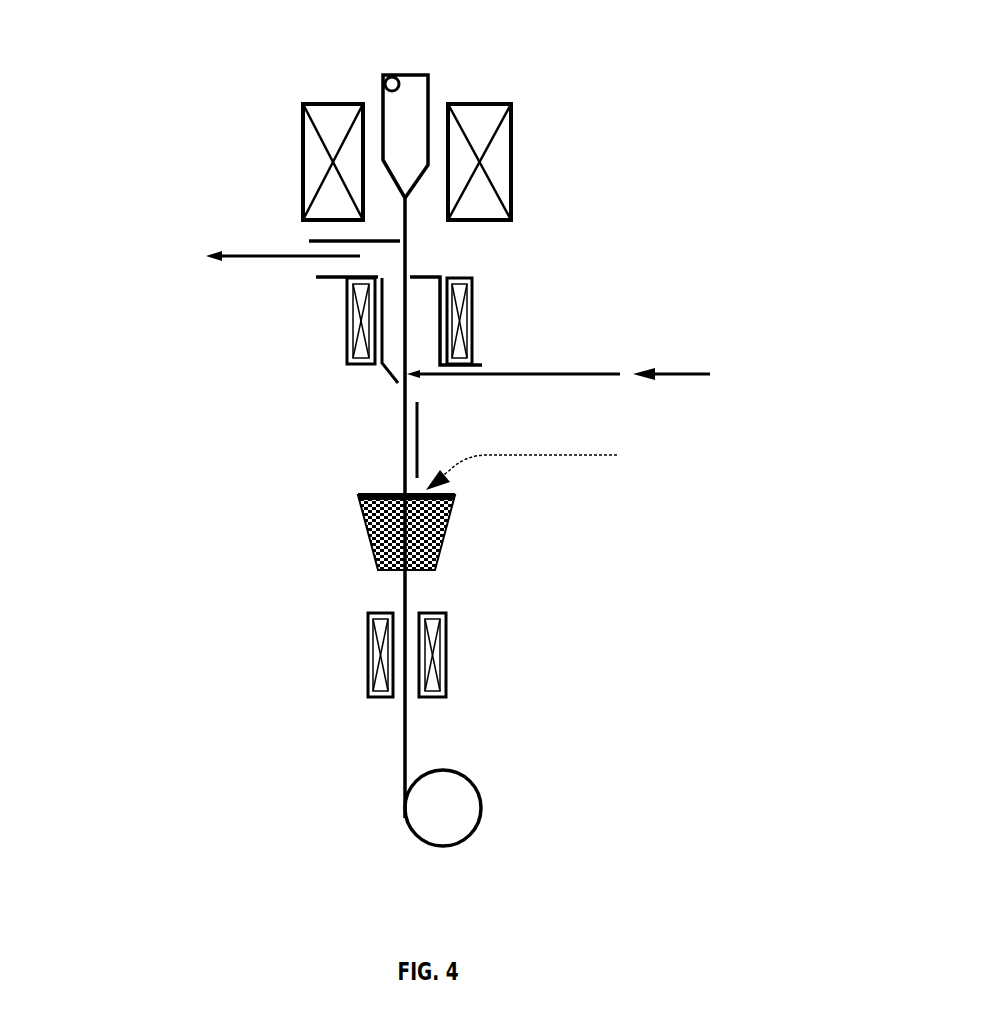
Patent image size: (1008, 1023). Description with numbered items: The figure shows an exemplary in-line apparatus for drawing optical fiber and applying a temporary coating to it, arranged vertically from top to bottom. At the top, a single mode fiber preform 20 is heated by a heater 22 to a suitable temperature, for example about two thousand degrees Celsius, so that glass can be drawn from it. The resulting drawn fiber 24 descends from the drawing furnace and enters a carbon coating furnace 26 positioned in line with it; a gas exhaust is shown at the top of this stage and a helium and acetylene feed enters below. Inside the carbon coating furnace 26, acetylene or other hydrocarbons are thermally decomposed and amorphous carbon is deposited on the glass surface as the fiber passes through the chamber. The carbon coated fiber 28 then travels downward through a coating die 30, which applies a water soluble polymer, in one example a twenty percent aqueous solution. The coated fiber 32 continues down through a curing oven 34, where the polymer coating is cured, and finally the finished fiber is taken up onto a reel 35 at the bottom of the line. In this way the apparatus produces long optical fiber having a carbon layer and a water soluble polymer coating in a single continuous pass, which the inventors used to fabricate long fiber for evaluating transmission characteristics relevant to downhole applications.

The single mode fiber preform 20 is at (425, 75).
The heater 22 is at (497, 156).
The drawn fiber 24 is at (410, 243).
The carbon coating furnace 26 is at (425, 298).
The carbon coated fiber 28 is at (410, 393).
The coating die 30 is at (450, 525).
The coated fiber 32 is at (407, 727).
The curing oven 34 is at (445, 640).
The reel 35 is at (460, 793).